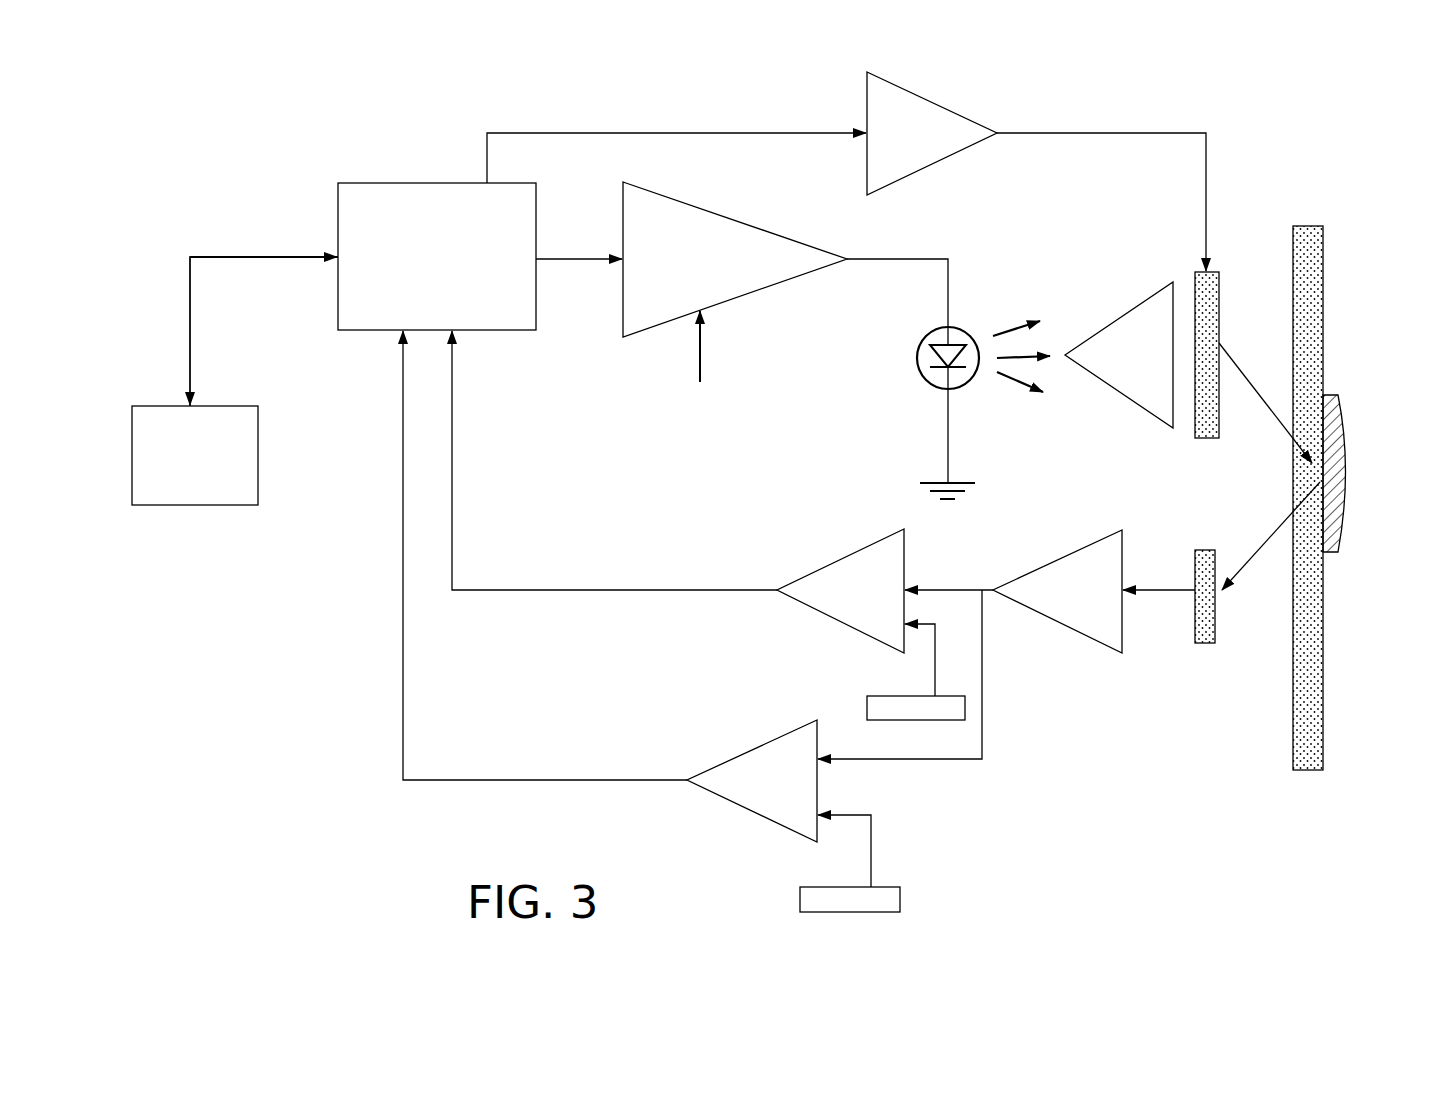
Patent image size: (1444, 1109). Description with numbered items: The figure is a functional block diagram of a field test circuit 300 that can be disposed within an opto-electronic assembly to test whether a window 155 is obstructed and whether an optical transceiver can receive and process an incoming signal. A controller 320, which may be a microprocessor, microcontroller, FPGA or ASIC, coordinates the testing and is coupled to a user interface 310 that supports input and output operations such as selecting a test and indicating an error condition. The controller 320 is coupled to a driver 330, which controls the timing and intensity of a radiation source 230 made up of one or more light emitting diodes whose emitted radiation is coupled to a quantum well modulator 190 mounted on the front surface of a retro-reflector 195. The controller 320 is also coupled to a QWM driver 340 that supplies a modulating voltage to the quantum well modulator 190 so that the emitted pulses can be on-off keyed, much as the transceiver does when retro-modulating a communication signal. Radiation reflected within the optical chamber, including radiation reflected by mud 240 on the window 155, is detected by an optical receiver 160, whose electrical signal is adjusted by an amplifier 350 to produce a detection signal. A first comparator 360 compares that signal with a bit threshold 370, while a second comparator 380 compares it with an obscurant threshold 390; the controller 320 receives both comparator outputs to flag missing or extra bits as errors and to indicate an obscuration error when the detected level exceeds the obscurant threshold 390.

The field test circuit 300 is at (1097, 60).
The user interface 310 is at (162, 405).
The controller 320 is at (358, 182).
The driver 330 is at (733, 220).
The QWM driver 340 is at (866, 97).
The radiation source 230 is at (918, 362).
The retro-reflector 195 is at (1158, 402).
The quantum well modulator 190 is at (1195, 282).
The window 155 is at (1323, 246).
The mud 240 is at (1350, 415).
The optical receiver 160 is at (1207, 550).
The amplifier 350 is at (1103, 643).
The first comparator 360 is at (797, 577).
The bit threshold 370 is at (867, 708).
The second comparator 380 is at (727, 760).
The obscurant threshold 390 is at (900, 890).